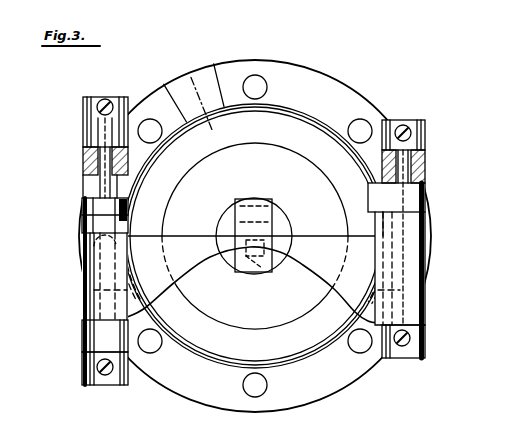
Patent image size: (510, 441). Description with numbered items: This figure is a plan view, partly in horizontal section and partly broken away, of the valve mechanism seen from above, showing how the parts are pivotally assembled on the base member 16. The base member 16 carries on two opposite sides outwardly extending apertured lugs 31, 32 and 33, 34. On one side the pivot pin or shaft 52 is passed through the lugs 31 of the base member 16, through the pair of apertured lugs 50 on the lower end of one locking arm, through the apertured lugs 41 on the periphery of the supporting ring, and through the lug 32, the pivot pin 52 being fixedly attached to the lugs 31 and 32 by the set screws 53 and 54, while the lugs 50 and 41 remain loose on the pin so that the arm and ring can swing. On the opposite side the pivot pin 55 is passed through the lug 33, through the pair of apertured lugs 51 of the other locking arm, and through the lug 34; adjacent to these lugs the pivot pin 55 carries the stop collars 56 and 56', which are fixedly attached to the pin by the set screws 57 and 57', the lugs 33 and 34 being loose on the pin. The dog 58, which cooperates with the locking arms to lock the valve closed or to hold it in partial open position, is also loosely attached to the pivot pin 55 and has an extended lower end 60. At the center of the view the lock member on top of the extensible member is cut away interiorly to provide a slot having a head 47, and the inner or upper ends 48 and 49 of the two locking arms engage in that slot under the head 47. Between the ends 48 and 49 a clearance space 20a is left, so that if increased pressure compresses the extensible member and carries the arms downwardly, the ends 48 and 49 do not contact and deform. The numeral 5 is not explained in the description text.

The base member 16 is at (254, 414).
The section line 5 is at (189, 71).
The head 47 is at (250, 212).
The upper end of locking arm 48 is at (277, 240).
The upper end of locking arm 49 is at (238, 252).
The space 20a is at (270, 262).
The set screw 54 is at (408, 128).
The lug 32 is at (426, 146).
The apertured lugs 50 is at (426, 172).
The apertured lugs 41 is at (405, 203).
The pivot pin 52 is at (415, 228).
The lugs 31 is at (426, 342).
The set screw 53 is at (412, 360).
The set screw 57' is at (90, 92).
The stop collar 56' is at (81, 117).
The lug 34 is at (84, 133).
The apertured lugs 51 is at (84, 160).
The pivot pin 55 is at (100, 188).
The dog 58 is at (88, 222).
The stop collar 56 is at (78, 295).
The lug 33 is at (86, 343).
The lower end of dog 60 is at (104, 387).
The set screw 57 is at (76, 385).